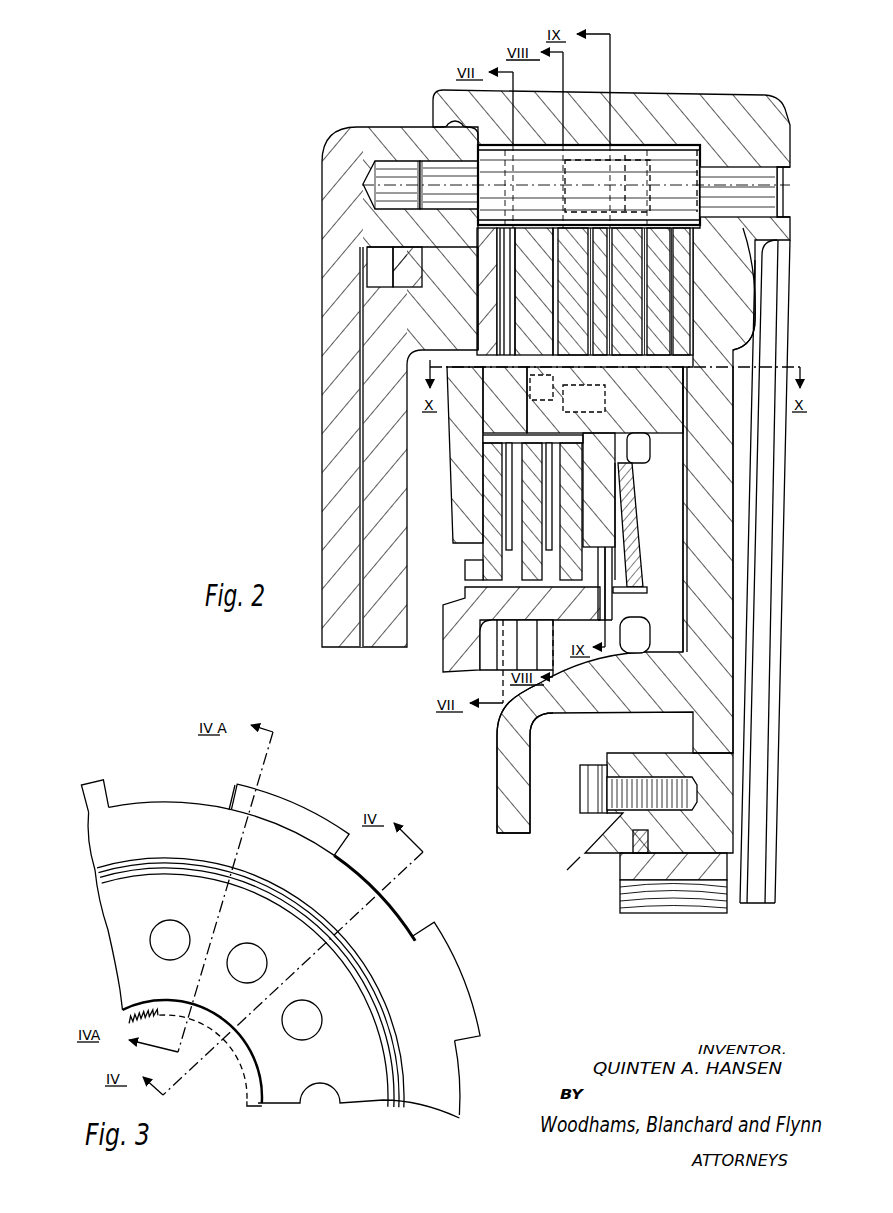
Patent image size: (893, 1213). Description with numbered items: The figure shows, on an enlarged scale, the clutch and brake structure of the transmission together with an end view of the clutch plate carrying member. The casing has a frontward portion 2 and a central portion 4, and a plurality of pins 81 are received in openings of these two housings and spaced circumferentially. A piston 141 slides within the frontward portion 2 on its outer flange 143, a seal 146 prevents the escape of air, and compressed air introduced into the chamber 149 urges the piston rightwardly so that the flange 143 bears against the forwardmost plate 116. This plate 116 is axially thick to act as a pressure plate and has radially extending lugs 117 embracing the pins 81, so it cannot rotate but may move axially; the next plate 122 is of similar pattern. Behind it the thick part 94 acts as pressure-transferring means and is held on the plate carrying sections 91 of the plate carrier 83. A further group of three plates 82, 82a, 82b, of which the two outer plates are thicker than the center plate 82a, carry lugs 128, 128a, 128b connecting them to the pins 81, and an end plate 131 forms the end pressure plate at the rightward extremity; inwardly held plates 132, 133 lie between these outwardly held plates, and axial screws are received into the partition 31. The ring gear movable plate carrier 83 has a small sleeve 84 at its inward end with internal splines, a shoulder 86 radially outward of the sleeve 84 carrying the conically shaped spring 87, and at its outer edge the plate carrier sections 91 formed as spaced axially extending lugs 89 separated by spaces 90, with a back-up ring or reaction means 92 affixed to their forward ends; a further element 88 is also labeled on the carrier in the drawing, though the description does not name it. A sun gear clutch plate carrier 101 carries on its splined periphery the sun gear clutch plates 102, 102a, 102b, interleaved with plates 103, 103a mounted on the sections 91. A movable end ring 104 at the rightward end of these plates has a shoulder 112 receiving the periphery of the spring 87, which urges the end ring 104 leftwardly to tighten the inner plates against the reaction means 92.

In FIG. 2, the frontward portion 2 is at (322, 362).
In FIG. 2, the central portion 4 is at (734, 96).
In FIG. 2, the partition 31 is at (747, 310).
In FIG. 2, the pins 81 is at (698, 150).
In FIG. 2, the plate 82 is at (578, 345).
In FIG. 2, the center plate 82a is at (617, 167).
In FIG. 2, the plate 82b is at (683, 283).
In FIG. 2, the plate carrier 83 is at (498, 735).
In FIG. 3, the plate carrier 83 is at (466, 977).
In FIG. 3, the sleeve 84 is at (168, 1000).
In FIG. 2, the shoulder 86 is at (627, 610).
In FIG. 3, the shoulder 86 is at (160, 866).
In FIG. 2, the spring 87 is at (632, 520).
In FIG. 2, the plate 88 is at (692, 468).
In FIG. 3, the plate 88 is at (360, 877).
In FIG. 2, the lugs 89 is at (677, 428).
In FIG. 3, the lugs 89 is at (297, 812).
In FIG. 3, the spaces 90 is at (200, 803).
In FIG. 2, the plate carrier sections 91 is at (495, 383).
In FIG. 3, the plate carrier sections 91 is at (245, 783).
In FIG. 2, the back-up ring 92 is at (457, 422).
In FIG. 2, the plate 94 is at (533, 240).
In FIG. 2, the sun gear clutch plate carrier 101 is at (443, 662).
In FIG. 2, the sun gear clutch plates 102 is at (490, 453).
In FIG. 2, the sun gear clutch plate 102a is at (533, 500).
In FIG. 2, the sun gear clutch plate 102b is at (563, 482).
In FIG. 2, the plates 103 is at (550, 548).
In FIG. 2, the plate 103a is at (507, 470).
In FIG. 2, the movable end ring 104 is at (597, 455).
In FIG. 2, the shoulder 112 is at (635, 482).
In FIG. 2, the plate 116 is at (482, 280).
In FIG. 2, the lugs 117 is at (449, 185).
In FIG. 2, the plate 122 is at (500, 328).
In FIG. 2, the lug 128 is at (577, 150).
In FIG. 2, the lug 128a is at (625, 150).
In FIG. 2, the lug 128b is at (697, 150).
In FIG. 2, the end plate 131 is at (698, 275).
In FIG. 2, the inwardly held plate 132 is at (633, 345).
In FIG. 2, the inwardly held plate 133 is at (597, 348).
In FIG. 2, the piston 141 is at (380, 477).
In FIG. 2, the outer flange 143 is at (440, 253).
In FIG. 2, the seal 146 is at (400, 266).
In FIG. 2, the chamber 149 is at (360, 427).